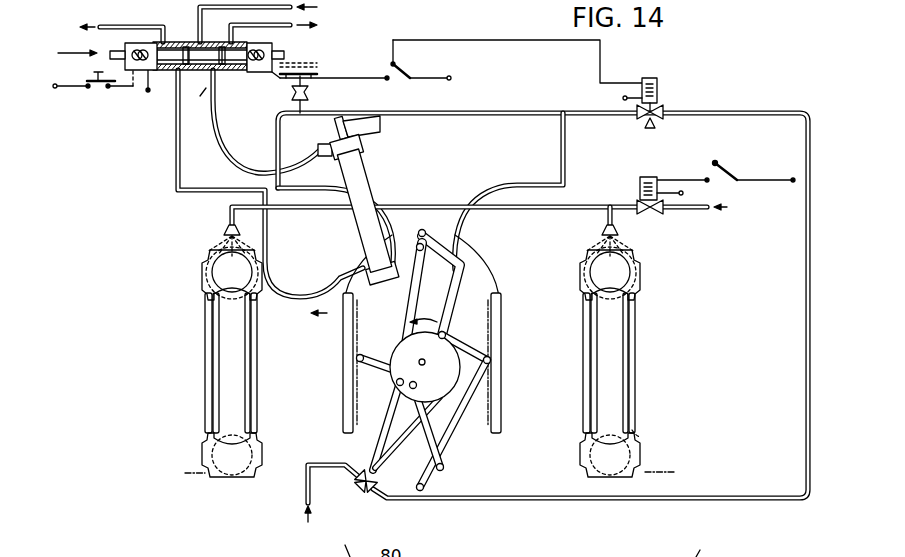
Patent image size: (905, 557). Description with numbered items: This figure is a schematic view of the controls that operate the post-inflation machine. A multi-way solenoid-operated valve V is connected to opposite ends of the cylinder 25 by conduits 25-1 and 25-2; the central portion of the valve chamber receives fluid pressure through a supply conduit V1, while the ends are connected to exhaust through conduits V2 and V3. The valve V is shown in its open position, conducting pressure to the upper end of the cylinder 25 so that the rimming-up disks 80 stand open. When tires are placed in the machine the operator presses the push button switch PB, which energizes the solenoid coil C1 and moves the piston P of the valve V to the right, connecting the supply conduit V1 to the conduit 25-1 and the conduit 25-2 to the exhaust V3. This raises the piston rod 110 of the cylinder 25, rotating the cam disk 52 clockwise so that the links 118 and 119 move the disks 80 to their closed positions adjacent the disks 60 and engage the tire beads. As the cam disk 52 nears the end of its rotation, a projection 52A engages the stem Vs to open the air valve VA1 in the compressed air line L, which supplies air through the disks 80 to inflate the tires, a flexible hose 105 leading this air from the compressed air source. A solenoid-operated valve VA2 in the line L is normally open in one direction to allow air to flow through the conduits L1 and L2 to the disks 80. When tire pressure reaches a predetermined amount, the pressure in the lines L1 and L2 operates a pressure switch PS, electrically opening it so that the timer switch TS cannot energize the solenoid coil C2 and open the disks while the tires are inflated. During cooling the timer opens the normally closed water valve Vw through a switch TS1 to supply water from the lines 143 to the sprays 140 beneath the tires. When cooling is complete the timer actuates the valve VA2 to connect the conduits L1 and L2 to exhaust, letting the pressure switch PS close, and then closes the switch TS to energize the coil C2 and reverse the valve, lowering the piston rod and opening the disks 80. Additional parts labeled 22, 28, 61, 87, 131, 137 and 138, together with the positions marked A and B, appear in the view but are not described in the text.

The piston rod end block 22 is at (382, 128).
The cylinder 25 is at (375, 166).
The conduit 25-1 is at (176, 151).
The conduit 25-2 is at (225, 148).
The piston rod 28 is at (338, 130).
The cam disk 52 is at (447, 385).
The projection 52A is at (456, 395).
The disks 60 is at (207, 398).
The hanger notch 61 is at (640, 437).
The rimming-up disk 80 is at (258, 343).
The guide plate 87 is at (355, 380).
The flexible hose 105 is at (343, 319).
The piston rod 110 is at (398, 272).
The link 118 is at (455, 268).
The link 119 is at (385, 428).
The link 131 is at (478, 326).
The link 137 is at (434, 468).
The link 138 is at (370, 387).
The spray pipe 140 is at (226, 233).
The water line 143 is at (589, 205).
The left hanger position A is at (186, 476).
The right hanger position B is at (666, 474).
The solenoid coil C1 is at (125, 45).
The solenoid coil C2 is at (286, 50).
The compressed air line L is at (457, 501).
The conduit L1 is at (384, 221).
The conduit L2 is at (530, 193).
The piston P is at (156, 85).
The push button switch PB is at (93, 99).
The pressure switch PS is at (289, 96).
The timer switch TS is at (414, 84).
The switch TS1 is at (731, 160).
The multi-way solenoid-operated valve V is at (200, 77).
The supply conduit V1 is at (201, 22).
The exhaust conduit V2 is at (117, 25).
The exhaust conduit V3 is at (272, 33).
The air valve VA1 is at (366, 493).
The solenoid-operated valve VA2 is at (661, 99).
The stem Vs is at (439, 437).
The solenoid-operated valve Vw is at (652, 211).